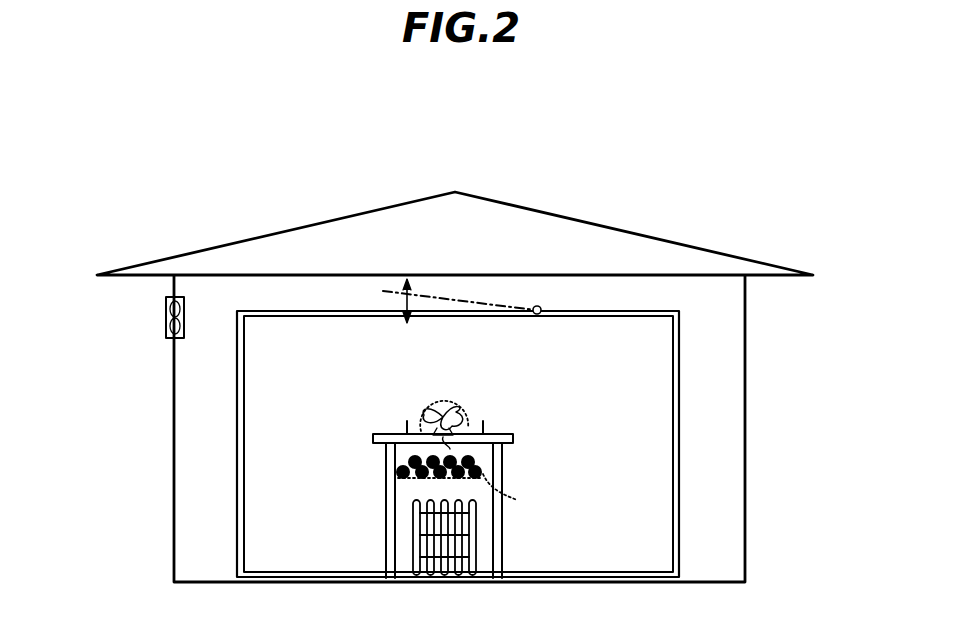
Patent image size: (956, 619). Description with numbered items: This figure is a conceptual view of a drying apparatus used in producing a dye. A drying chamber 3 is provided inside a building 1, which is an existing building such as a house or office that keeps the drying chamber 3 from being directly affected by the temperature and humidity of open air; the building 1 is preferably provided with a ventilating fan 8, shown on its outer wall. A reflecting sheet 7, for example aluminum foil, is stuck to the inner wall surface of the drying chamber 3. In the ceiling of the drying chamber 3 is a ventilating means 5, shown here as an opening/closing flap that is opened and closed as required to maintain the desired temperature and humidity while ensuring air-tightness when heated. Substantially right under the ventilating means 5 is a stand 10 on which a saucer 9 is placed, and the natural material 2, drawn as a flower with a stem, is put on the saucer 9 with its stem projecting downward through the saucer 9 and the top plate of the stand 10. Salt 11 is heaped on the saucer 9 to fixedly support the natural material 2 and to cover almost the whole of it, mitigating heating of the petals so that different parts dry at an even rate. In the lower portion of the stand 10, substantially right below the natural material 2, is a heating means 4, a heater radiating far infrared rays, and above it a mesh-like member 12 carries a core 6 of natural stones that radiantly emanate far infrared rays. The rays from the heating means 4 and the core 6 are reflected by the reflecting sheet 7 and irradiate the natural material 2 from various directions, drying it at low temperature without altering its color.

The building 1 is at (617, 228).
The natural material 2 is at (425, 410).
The drying chamber 3 is at (680, 412).
The heating means 4 is at (413, 535).
The ventilating means 5 is at (457, 313).
The core 6 is at (478, 467).
The reflecting sheet 7 is at (247, 403).
The ventilating fan 8 is at (166, 338).
The saucer 9 is at (406, 425).
The stand 10 is at (375, 443).
The salt 11 is at (475, 420).
The mesh-like member 12 is at (505, 492).